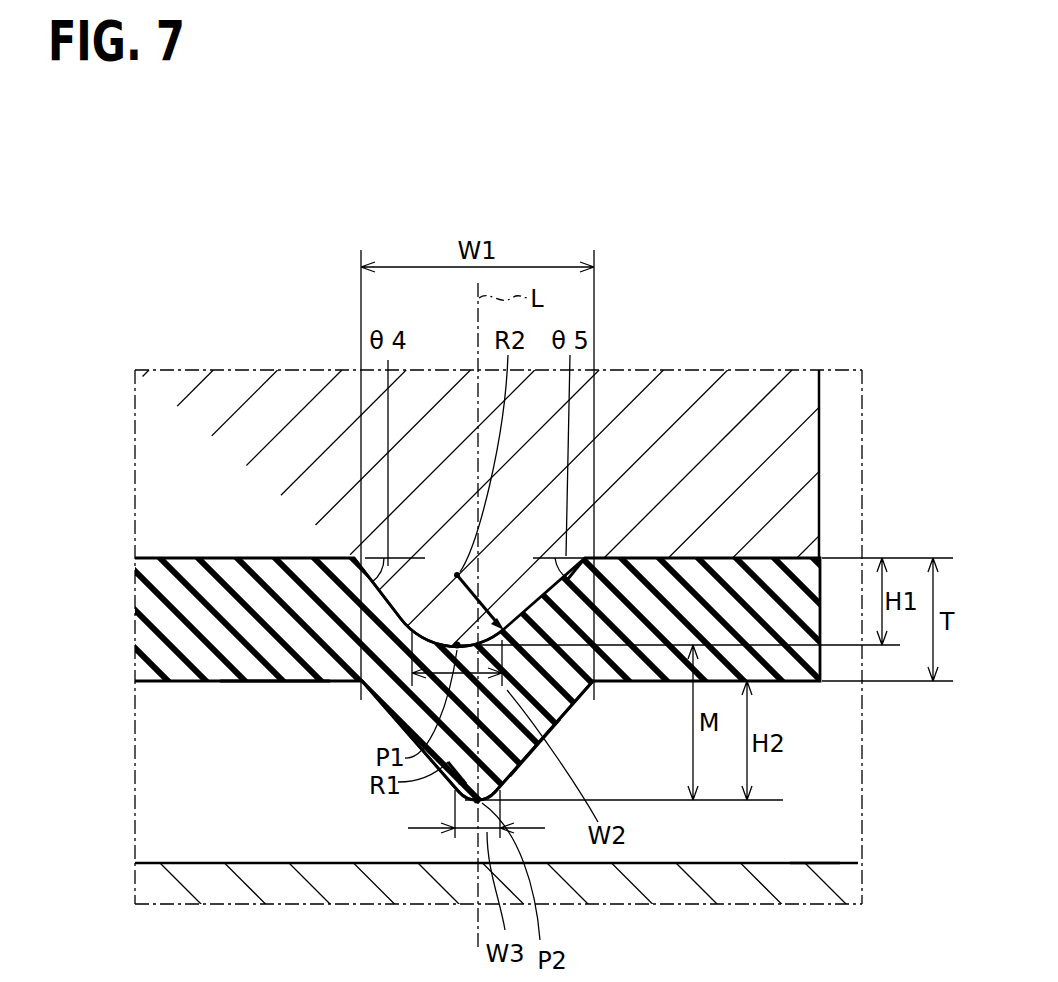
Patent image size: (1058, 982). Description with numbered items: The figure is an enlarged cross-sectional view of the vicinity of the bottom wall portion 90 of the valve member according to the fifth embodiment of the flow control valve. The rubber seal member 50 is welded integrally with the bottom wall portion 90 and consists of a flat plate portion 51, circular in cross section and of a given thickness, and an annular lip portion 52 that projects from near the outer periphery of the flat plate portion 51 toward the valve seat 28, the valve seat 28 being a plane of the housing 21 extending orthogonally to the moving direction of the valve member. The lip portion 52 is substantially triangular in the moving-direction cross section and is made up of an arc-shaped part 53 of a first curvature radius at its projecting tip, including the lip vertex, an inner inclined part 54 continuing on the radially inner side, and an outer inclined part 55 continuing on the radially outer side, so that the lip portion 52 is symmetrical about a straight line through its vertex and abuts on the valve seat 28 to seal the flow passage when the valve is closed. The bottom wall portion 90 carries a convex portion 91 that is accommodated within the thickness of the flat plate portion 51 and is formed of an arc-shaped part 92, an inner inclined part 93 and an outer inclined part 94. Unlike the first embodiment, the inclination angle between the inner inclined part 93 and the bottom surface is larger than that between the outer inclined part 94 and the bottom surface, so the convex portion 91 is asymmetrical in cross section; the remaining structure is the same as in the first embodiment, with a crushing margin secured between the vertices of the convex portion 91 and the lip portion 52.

The housing 21 is at (187, 882).
The valve seat 28 is at (812, 863).
The rubber seal member 50 is at (186, 699).
The flat plate portion 51 is at (273, 675).
The lip portion 52 is at (522, 742).
The arc-shaped part 53 is at (470, 812).
The inner inclined part 54 is at (363, 690).
The outer inclined part 55 is at (572, 696).
The bottom wall portion 90 is at (727, 397).
The convex portion 91 is at (417, 592).
The arc-shaped part 92 is at (437, 628).
The inner inclined part 93 is at (351, 556).
The outer inclined part 94 is at (598, 566).